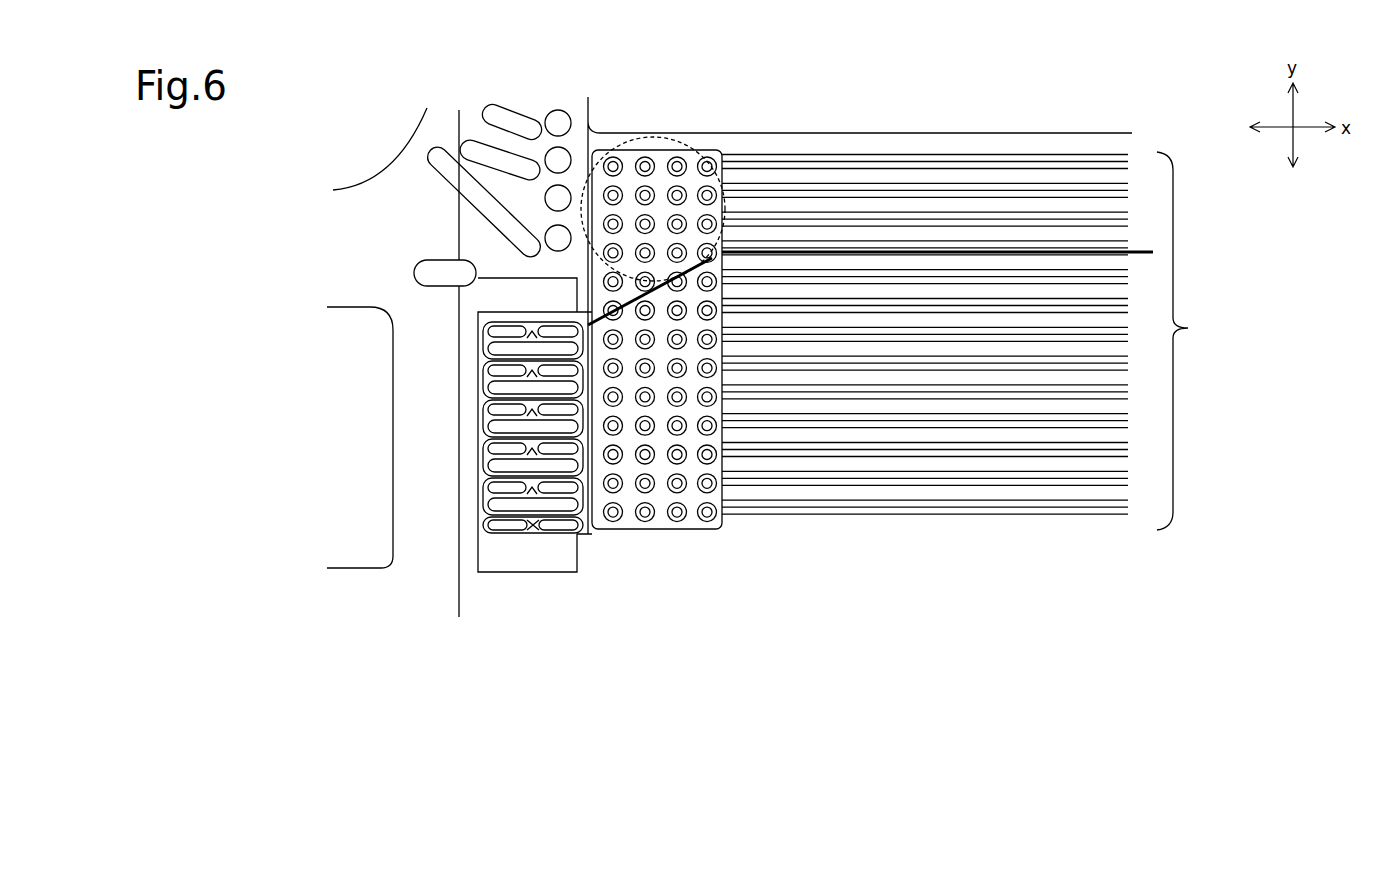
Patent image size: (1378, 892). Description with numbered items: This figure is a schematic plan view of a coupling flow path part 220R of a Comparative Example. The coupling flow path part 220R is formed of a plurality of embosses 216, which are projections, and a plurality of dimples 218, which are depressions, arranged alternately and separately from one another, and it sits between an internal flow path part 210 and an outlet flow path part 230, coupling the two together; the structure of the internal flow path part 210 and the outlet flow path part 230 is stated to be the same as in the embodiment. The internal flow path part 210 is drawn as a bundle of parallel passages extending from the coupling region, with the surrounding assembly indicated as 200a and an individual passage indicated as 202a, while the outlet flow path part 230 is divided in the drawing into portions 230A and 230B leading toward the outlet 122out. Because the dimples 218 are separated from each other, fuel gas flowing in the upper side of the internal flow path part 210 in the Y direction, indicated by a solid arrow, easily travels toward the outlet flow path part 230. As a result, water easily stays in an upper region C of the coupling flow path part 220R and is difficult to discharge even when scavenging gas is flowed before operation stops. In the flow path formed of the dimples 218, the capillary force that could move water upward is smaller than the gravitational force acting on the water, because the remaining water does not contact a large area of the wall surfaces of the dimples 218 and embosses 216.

The heat exchanger core 200a is at (1207, 341).
The tube 202a is at (1087, 160).
The internal flow path part 210 is at (1128, 645).
The embosses 216 is at (646, 152).
The dimples 218 is at (622, 152).
The coupling flow path part 220R is at (723, 635).
The outlet flow path part 230 is at (735, 726).
The outlet flow path first portion 230A is at (592, 635).
The outlet flow path second portion 230B is at (393, 635).
The outlet 122out is at (357, 543).
The upper region C is at (588, 150).